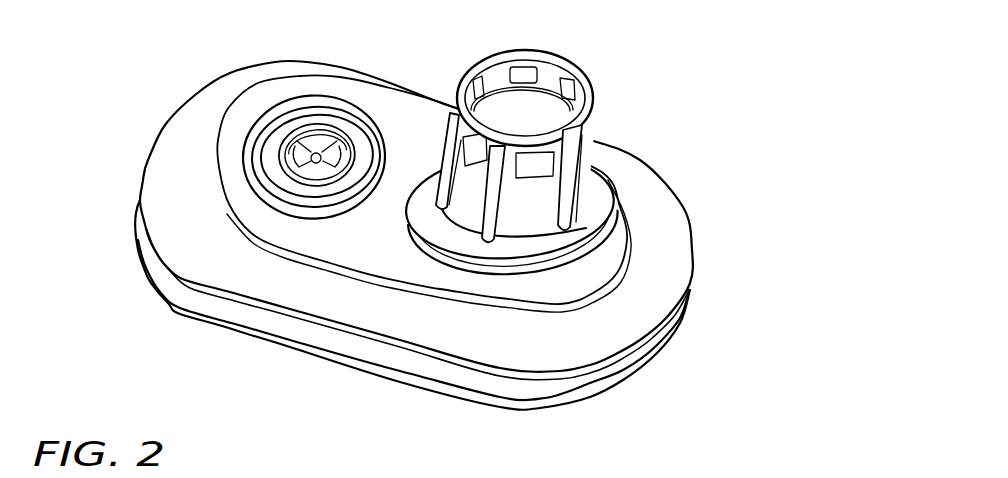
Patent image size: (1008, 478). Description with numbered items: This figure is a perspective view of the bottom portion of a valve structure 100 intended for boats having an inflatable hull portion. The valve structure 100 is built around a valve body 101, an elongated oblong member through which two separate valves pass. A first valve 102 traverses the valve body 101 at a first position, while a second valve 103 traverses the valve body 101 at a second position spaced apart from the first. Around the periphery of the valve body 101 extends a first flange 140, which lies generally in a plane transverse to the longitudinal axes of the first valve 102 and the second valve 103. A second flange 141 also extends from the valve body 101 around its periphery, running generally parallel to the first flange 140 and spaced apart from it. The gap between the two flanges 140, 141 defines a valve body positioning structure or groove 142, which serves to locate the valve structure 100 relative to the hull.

The valve structure 100 is at (449, 241).
The valve body 101 is at (397, 107).
The first valve 102 is at (435, 278).
The second valve 103 is at (301, 218).
The first flange 140 is at (670, 237).
The second flange 141 is at (622, 384).
The valve body positioning structure or groove 142 is at (198, 293).